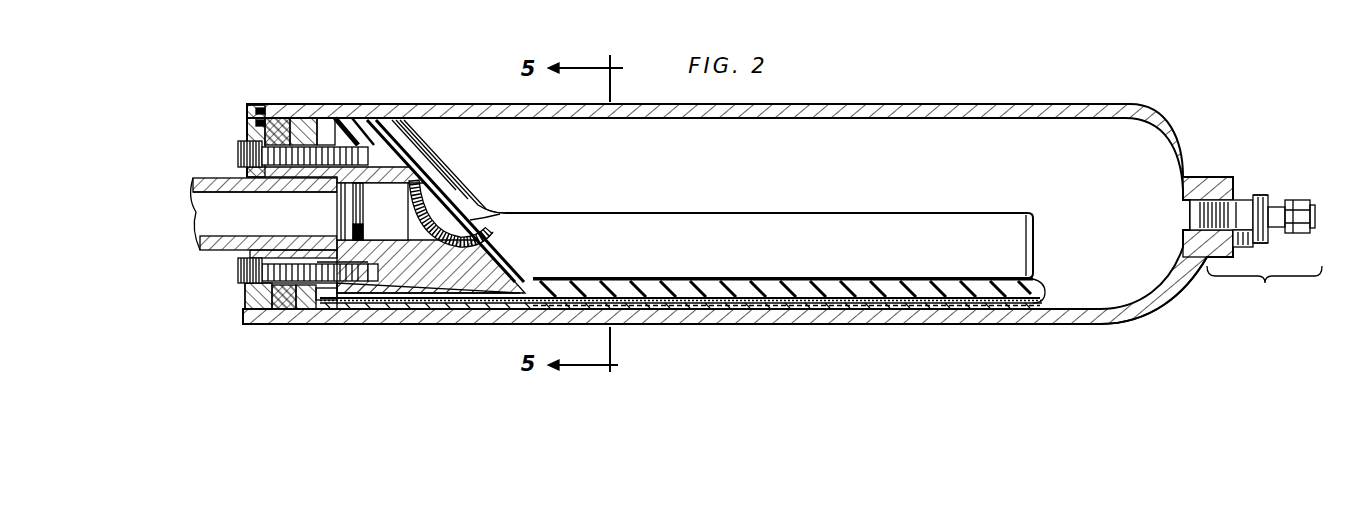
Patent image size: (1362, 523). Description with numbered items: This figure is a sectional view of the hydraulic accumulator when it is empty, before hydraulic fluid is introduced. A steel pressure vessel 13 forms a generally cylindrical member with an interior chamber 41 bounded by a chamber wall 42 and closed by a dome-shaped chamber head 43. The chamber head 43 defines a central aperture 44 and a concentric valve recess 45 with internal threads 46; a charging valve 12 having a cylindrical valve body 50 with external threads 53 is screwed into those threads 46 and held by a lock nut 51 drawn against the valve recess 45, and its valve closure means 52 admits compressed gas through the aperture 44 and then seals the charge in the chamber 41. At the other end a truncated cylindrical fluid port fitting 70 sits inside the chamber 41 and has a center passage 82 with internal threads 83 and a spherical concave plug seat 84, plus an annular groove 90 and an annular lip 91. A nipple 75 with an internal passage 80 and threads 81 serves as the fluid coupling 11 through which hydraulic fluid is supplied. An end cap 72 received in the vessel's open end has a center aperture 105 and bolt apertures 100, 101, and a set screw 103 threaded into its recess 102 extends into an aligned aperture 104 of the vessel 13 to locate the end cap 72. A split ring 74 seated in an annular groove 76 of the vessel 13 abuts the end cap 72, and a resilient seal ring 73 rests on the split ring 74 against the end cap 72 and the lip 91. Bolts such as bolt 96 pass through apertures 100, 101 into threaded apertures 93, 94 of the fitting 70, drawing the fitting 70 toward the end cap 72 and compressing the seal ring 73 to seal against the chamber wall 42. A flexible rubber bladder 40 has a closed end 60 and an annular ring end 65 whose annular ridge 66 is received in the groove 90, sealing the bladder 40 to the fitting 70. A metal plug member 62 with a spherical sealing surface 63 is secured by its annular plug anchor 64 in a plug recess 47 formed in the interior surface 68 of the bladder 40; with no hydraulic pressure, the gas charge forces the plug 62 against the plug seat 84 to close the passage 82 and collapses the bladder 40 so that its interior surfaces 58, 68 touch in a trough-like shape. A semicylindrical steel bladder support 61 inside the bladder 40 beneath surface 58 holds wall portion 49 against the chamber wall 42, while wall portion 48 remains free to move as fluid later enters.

The fluid coupling 11 is at (220, 268).
The charging valve 12 is at (1264, 285).
The pressure vessel 13 is at (1041, 100).
The flexible bladder 40 is at (703, 230).
The interior chamber 41 is at (1077, 130).
The chamber wall 42 is at (912, 114).
The chamber head 43 is at (1185, 270).
The aperture 44 is at (1181, 217).
The valve recess 45 is at (1181, 247).
The internal threads 46 is at (1270, 236).
The plug recess 47 is at (460, 196).
The wall portion 48 is at (840, 283).
The wall portion 49 is at (780, 310).
The valve body 50 is at (1257, 176).
The lock nut 51 is at (1265, 198).
The valve closure means 52 is at (1308, 207).
The external threads 53 is at (1230, 204).
The semicylindrical interior surface 58 is at (481, 303).
The closed end 60 is at (1035, 292).
The bladder support 61 is at (910, 305).
The plug member 62 is at (470, 219).
The sealing surface 63 is at (432, 180).
The plug anchor 64 is at (484, 223).
The ring end 65 is at (341, 118).
The annular ridge 66 is at (399, 135).
The interior surface 68 is at (760, 287).
The fluid port fitting 70 is at (453, 286).
The end cap 72 is at (246, 308).
The seal ring 73 is at (305, 307).
The split ring 74 is at (279, 117).
The nipple 75 is at (223, 177).
The annular groove 76 is at (303, 119).
The internal passage 80 is at (192, 208).
The threads 81 is at (322, 179).
The center passage 82 is at (371, 208).
The internal threads 83 is at (364, 223).
The plug seat 84 is at (492, 246).
The annular groove 90 is at (332, 276).
The annular lip 91 is at (323, 166).
The threaded aperture 93 is at (436, 158).
The threaded aperture 94 is at (374, 279).
The bolt 96 is at (240, 288).
The bolt aperture 100 is at (247, 138).
The bolt aperture 101 is at (270, 292).
The recess 102 is at (247, 124).
The set screw 103 is at (258, 108).
The aperture 104 is at (247, 110).
The center aperture 105 is at (200, 236).